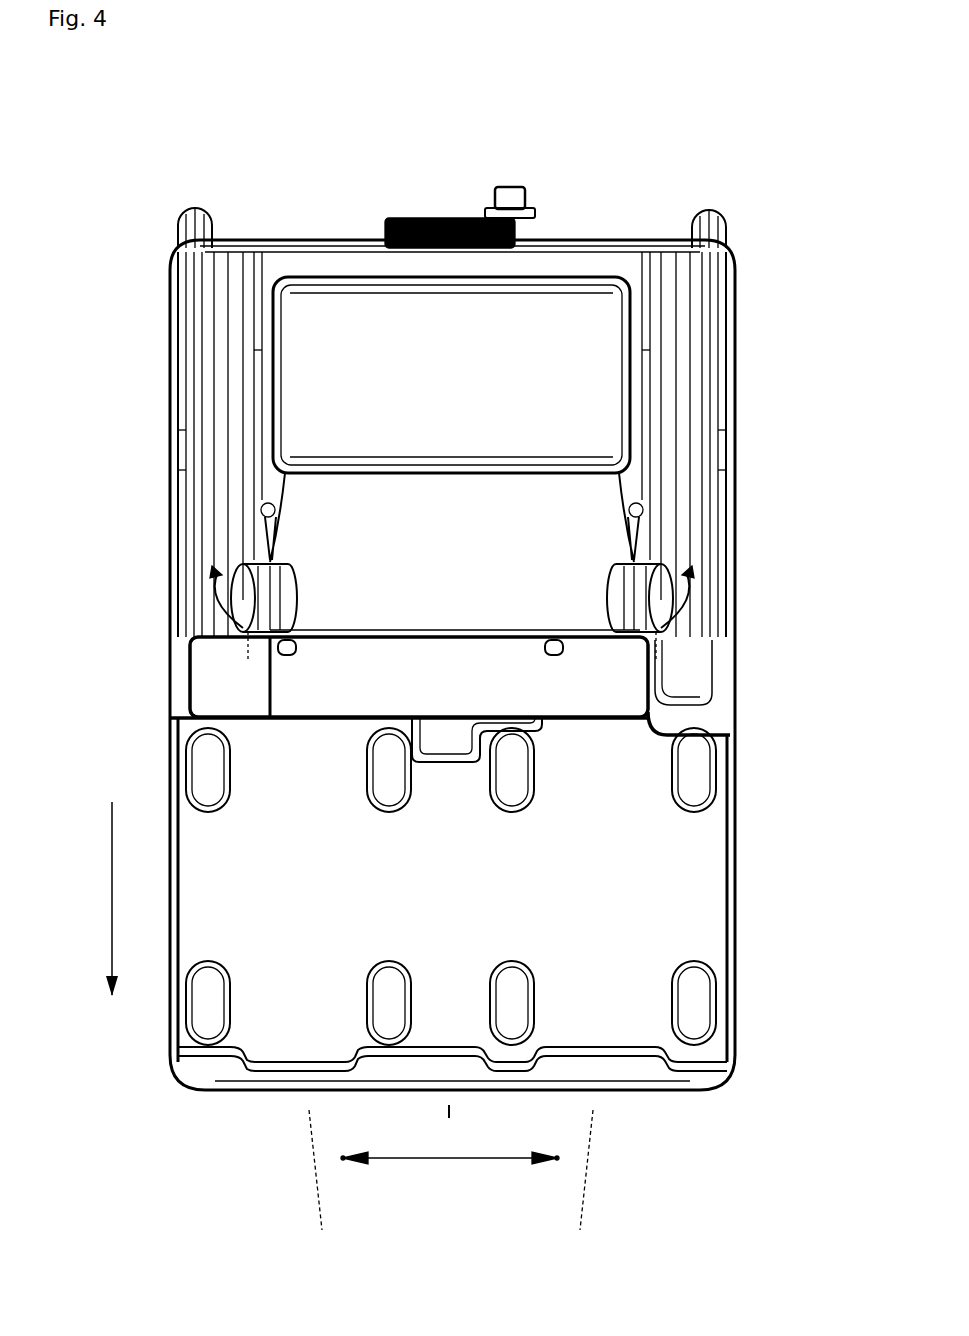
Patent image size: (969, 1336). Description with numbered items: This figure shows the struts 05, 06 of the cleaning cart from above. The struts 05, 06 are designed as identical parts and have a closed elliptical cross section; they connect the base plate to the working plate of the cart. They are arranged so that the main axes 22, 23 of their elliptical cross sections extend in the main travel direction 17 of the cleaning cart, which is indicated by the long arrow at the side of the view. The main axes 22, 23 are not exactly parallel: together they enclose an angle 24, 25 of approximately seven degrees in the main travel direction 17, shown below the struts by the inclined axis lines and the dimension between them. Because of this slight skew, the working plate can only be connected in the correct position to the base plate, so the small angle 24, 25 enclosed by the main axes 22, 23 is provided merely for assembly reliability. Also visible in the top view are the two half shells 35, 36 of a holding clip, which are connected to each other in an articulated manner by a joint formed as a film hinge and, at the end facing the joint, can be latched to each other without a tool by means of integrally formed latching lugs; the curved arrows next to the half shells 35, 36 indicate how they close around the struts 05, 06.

The strut 05 is at (632, 600).
The strut 06 is at (272, 597).
The main travel direction 17 is at (73, 898).
The main axis 22 is at (665, 560).
The main axis 23 is at (237, 553).
The angle 24 is at (447, 1160).
The angle 25 is at (450, 1205).
The half shell 35 is at (612, 589).
The half shell 36 is at (291, 587).